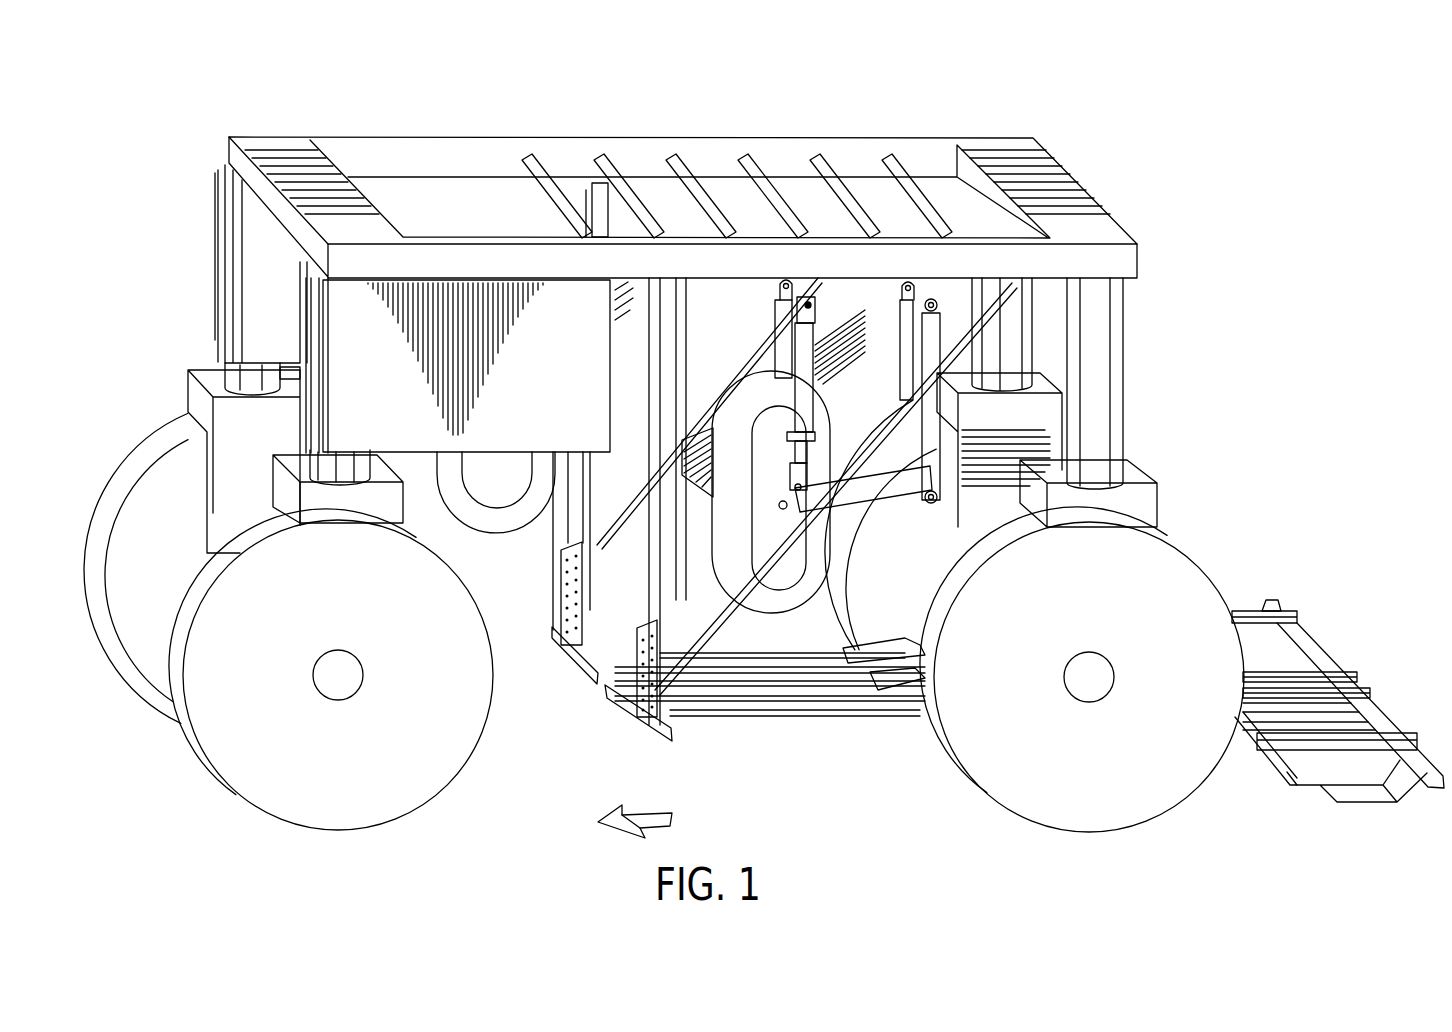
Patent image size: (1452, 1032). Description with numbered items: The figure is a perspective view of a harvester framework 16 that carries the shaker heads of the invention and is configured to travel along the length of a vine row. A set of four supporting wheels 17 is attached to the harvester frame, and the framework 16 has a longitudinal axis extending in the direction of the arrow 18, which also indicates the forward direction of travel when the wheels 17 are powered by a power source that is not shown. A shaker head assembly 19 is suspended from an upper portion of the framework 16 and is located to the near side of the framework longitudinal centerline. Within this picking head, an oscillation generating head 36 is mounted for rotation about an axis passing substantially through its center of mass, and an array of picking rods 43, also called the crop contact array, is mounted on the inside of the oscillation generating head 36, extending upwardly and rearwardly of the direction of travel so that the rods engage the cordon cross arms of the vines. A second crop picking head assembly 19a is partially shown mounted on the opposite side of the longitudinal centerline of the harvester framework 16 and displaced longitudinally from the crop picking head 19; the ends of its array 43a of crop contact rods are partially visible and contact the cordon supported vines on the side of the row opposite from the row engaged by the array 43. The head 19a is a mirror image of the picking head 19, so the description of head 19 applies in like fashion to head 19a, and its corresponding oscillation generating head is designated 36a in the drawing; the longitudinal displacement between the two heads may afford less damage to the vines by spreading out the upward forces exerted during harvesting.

The harvester framework 16 is at (448, 136).
The supporting wheels 17 is at (153, 432).
The arrow 18 is at (660, 818).
The shaker head assembly 19 is at (846, 395).
The second crop picking head assembly 19a is at (486, 540).
The oscillation generating head 36 is at (658, 600).
The support bar assembly 36a is at (513, 527).
The array of picking rods 43 is at (845, 307).
The array of crop contact rods 43a is at (620, 316).